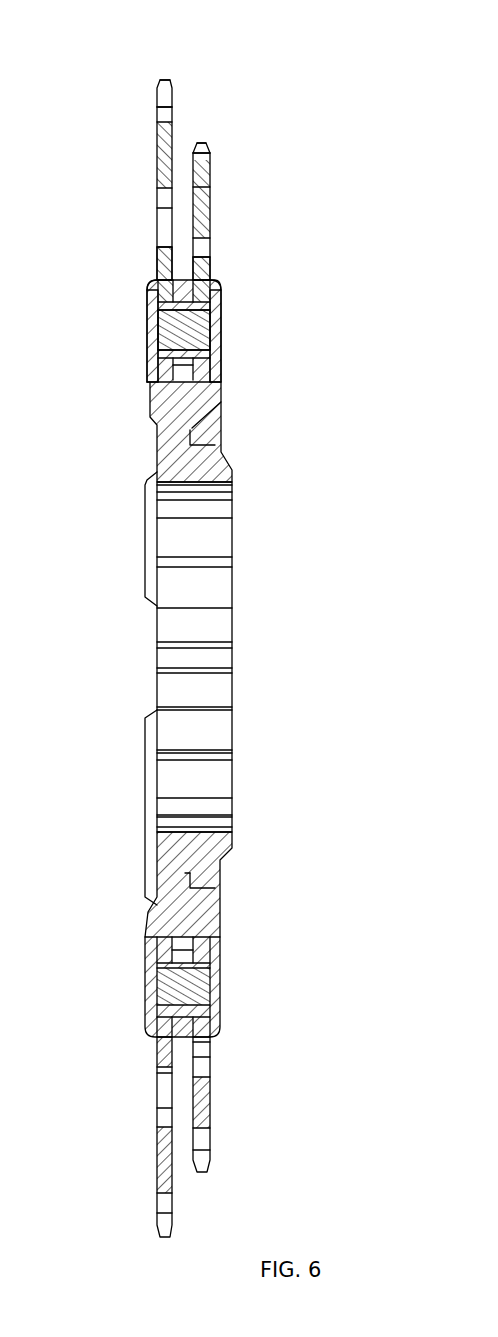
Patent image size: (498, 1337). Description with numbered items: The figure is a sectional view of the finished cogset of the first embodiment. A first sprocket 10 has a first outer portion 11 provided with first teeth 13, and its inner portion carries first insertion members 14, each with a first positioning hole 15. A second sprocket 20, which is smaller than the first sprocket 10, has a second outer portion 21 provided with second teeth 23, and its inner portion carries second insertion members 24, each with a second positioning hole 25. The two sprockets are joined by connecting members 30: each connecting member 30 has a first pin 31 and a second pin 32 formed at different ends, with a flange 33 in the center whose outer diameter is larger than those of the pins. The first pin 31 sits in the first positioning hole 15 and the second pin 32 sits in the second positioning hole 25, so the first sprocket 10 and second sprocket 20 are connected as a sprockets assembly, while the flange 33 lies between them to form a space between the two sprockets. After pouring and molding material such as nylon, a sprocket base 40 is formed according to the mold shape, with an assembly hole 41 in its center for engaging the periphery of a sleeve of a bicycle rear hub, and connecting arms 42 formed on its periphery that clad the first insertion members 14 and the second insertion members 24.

The first sprocket 10 is at (153, 141).
The first outer portion 11 is at (159, 78).
The first teeth 13 is at (170, 97).
The first insertion members 14 is at (156, 268).
The first positioning hole 15 is at (148, 285).
The second sprocket 20 is at (203, 200).
The second outer portion 21 is at (202, 138).
The second teeth 23 is at (207, 152).
The second insertion members 24 is at (208, 278).
The second positioning hole 25 is at (212, 293).
The connecting members 30 is at (176, 323).
The first pin 31 is at (160, 338).
The second pin 32 is at (215, 350).
The flange 33 is at (150, 385).
The sprocket base 40 is at (228, 740).
The assembly hole 41 is at (217, 685).
The connecting arms 42 is at (210, 318).